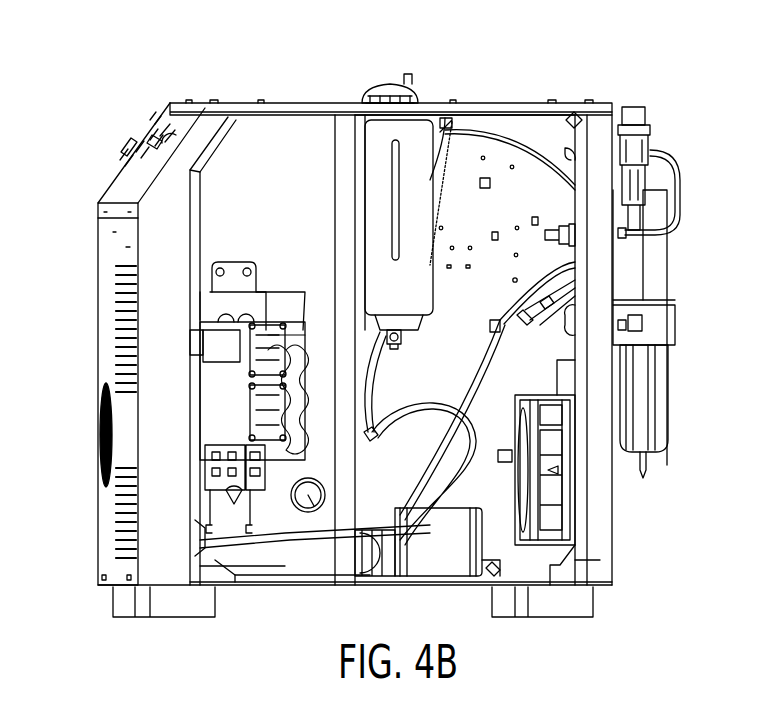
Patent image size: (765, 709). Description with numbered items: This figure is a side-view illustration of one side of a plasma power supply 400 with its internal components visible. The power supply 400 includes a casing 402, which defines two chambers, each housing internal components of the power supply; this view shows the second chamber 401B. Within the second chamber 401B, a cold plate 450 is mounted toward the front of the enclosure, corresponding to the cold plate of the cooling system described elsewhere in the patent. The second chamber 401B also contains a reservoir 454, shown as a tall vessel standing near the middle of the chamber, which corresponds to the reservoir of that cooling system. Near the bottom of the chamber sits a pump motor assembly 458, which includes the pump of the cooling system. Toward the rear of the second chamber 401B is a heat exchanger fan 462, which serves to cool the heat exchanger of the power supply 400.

The plasma power supply 400 is at (603, 69).
The second chamber 401B is at (477, 180).
The casing 402 is at (98, 243).
The cold plate 450 is at (212, 408).
The reservoir 454 is at (418, 218).
The pump motor assembly 458 is at (455, 558).
The heat exchanger fan 462 is at (555, 490).